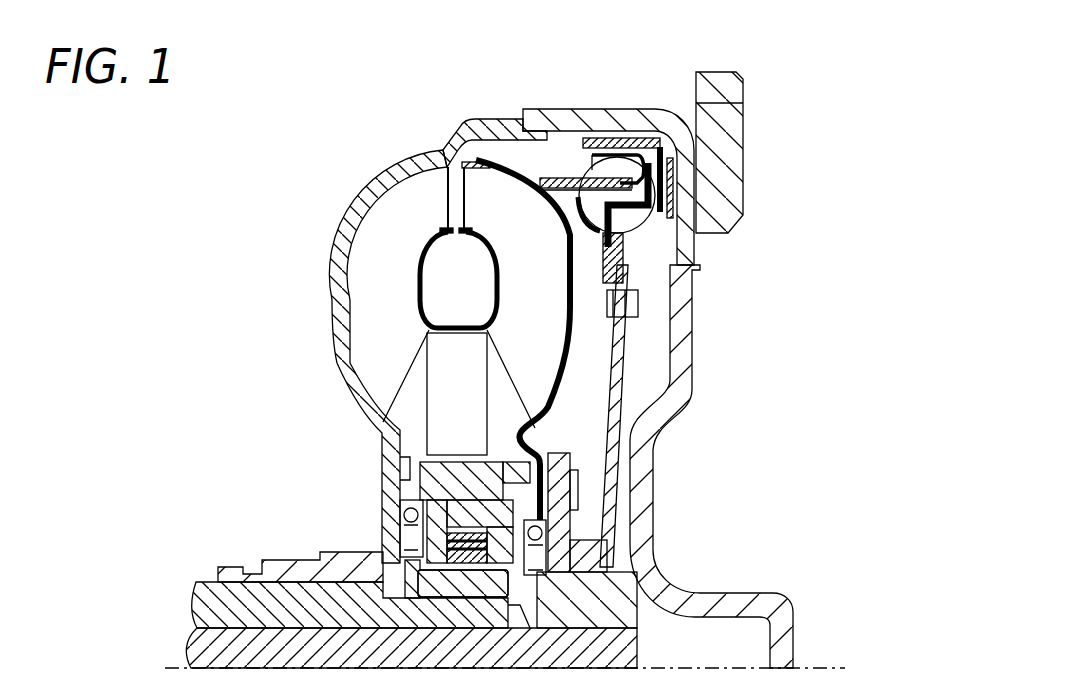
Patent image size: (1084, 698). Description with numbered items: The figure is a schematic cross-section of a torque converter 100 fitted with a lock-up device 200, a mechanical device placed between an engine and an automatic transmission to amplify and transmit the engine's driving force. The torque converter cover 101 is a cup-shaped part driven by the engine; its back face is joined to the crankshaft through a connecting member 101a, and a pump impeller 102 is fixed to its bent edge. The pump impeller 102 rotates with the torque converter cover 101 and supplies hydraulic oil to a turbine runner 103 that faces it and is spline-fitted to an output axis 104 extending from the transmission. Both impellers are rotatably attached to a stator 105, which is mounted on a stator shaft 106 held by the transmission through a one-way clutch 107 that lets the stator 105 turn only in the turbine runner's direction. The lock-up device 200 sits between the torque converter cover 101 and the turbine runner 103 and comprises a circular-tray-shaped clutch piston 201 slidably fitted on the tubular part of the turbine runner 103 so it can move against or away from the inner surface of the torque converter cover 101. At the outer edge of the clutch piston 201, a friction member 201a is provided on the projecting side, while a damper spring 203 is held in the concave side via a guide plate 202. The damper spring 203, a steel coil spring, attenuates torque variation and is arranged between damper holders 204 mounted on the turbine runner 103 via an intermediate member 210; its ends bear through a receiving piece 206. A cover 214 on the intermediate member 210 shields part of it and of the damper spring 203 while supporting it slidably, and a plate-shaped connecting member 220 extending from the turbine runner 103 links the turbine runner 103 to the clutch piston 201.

The torque converter 100 is at (322, 131).
The torque converter cover 101 is at (652, 483).
The connecting member 101a is at (720, 72).
The pump impeller 102 is at (331, 293).
The turbine runner 103 is at (571, 345).
The output axis 104 is at (196, 640).
The stator 105 is at (474, 407).
The stator shaft 106 is at (196, 603).
The one-way clutch 107 is at (385, 490).
The lock-up device 200 is at (574, 154).
The clutch piston 201 is at (623, 370).
The friction member 201a is at (673, 178).
The guide plate 202 is at (677, 137).
The damper spring 203 is at (639, 143).
The damper holder 204 is at (604, 138).
The receiving piece 206 is at (652, 222).
The intermediate member 210 is at (640, 252).
The cover 214 is at (586, 221).
The connecting member 220 is at (510, 155).